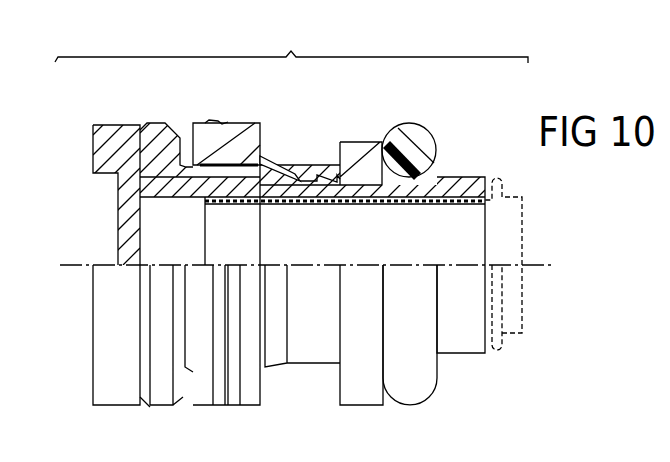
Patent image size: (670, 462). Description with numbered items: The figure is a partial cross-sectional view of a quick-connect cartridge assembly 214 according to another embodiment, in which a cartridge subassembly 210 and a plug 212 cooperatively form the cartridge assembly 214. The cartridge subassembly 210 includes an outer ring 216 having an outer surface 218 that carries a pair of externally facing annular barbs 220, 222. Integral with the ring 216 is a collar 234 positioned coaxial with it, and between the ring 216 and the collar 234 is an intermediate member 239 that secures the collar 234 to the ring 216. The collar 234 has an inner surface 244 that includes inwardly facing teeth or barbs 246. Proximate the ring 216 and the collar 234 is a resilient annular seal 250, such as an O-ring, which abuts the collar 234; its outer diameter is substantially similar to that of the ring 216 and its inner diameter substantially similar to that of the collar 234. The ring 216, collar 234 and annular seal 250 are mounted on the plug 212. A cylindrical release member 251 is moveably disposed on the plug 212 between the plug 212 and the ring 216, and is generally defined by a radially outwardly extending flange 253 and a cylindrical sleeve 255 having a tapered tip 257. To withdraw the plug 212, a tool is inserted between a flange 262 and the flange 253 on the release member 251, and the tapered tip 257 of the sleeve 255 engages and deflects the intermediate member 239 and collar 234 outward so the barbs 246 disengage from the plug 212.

The cartridge subassembly 210 is at (347, 110).
The plug 212 is at (105, 109).
The cartridge assembly 214 is at (291, 46).
The outer ring 216 is at (189, 107).
The outer surface 218 is at (252, 123).
The annular barb 220 is at (217, 122).
The annular barb 222 is at (232, 410).
The collar 234 is at (372, 150).
The intermediate member 239 is at (272, 162).
The inner surface 244 is at (350, 176).
The barbs 246 is at (338, 184).
The annular seal 250 is at (420, 132).
The release member 251 is at (148, 416).
The flange 253 is at (165, 133).
The cylindrical sleeve 255 is at (200, 170).
The tapered tip 257 is at (262, 172).
The flange 262 is at (103, 151).